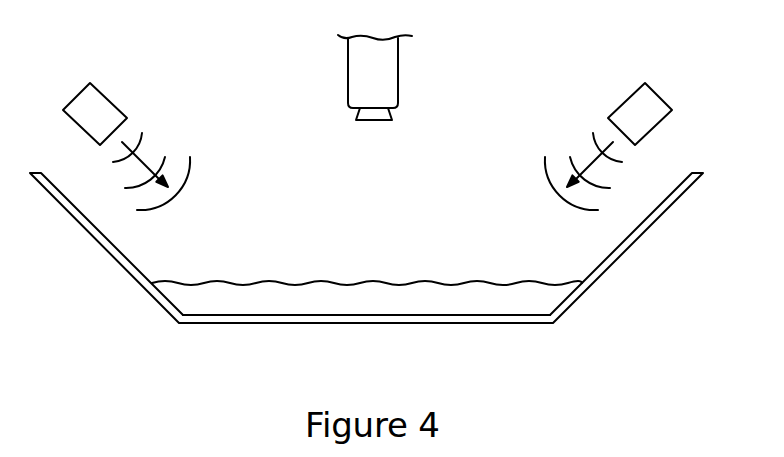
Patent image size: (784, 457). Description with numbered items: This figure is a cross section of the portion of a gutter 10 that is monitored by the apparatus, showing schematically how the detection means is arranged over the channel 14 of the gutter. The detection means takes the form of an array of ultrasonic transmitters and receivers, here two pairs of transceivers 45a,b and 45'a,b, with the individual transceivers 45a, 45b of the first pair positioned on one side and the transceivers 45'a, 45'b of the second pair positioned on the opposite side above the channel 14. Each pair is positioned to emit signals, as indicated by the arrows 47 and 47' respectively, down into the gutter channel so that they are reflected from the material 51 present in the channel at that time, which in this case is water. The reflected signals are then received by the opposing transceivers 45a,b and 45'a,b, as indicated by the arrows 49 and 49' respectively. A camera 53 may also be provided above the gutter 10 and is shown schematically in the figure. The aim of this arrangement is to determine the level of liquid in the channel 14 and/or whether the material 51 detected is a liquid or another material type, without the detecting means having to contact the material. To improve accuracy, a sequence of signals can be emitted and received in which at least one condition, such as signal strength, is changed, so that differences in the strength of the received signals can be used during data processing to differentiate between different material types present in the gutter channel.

The gutter 10 is at (632, 250).
The channel 14 is at (387, 302).
The transceivers 45a,b is at (73, 87).
The transceiver 45a is at (95, 114).
The transceiver 45b is at (77, 92).
The transceivers 45'a,b is at (668, 86).
The transceiver 45'a is at (640, 114).
The transceiver 45'b is at (640, 114).
The arrows 47 is at (172, 135).
The arrows 47' is at (563, 132).
The arrows 49 is at (189, 198).
The arrows 49' is at (543, 197).
The material 51 is at (485, 300).
The camera 53 is at (363, 61).